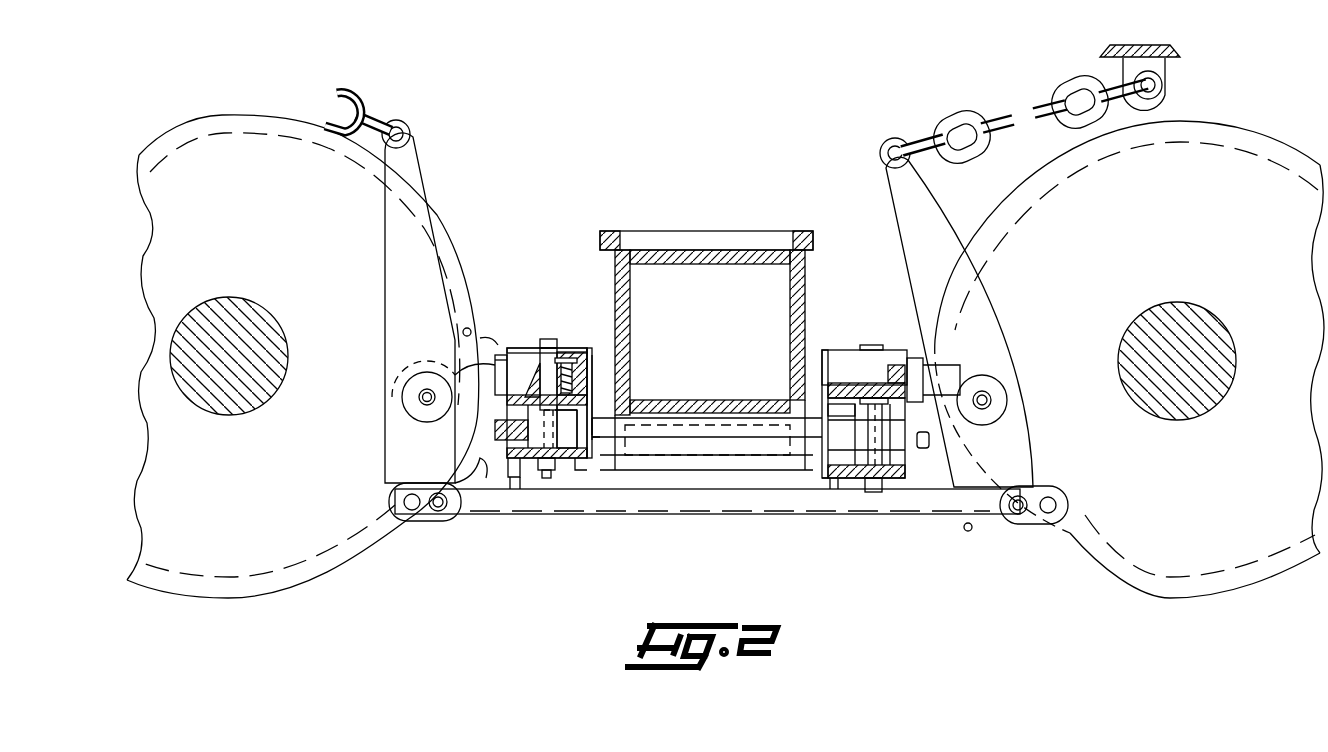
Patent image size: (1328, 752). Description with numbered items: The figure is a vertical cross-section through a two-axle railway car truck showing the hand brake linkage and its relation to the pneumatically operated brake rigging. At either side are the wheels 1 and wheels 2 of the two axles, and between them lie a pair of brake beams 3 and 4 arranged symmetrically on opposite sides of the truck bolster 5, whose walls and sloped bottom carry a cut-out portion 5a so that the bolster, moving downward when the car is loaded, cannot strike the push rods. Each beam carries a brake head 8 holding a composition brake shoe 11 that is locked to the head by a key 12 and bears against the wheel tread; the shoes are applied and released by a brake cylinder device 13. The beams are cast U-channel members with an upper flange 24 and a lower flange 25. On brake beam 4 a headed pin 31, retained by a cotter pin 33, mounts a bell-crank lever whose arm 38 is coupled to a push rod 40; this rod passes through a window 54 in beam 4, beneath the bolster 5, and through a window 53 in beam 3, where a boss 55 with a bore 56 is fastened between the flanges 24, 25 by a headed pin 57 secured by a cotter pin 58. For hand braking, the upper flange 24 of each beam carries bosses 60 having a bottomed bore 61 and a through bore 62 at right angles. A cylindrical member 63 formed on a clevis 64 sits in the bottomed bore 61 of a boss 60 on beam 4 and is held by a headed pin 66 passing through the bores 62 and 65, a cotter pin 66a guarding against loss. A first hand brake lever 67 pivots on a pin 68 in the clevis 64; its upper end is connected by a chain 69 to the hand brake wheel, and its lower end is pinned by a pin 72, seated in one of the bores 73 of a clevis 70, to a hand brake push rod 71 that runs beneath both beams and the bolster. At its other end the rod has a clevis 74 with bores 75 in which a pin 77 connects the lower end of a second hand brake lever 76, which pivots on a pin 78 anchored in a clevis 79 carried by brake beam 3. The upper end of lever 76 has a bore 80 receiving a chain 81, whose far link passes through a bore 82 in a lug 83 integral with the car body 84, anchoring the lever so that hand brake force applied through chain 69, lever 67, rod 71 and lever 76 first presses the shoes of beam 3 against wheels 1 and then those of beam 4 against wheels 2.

The wheel 1 is at (1248, 168).
The wheel 2 is at (230, 148).
The brake beam 3 is at (815, 481).
The brake beam 4 is at (608, 363).
The truck bolster 5 is at (800, 298).
The cut-out portion 5a is at (800, 378).
The brake head 8 is at (975, 520).
The brake shoe 11 is at (721, 430).
The key 12 is at (497, 346).
The brake cylinder device 13 is at (469, 474).
The upper flange 24 is at (848, 400).
The lower flange 25 is at (522, 470).
The headed pin 31 is at (555, 466).
The cotter pin 33 is at (547, 478).
The arm 38 is at (496, 432).
The push rod 40 is at (725, 432).
The window 53 is at (832, 420).
The window 54 is at (580, 452).
The boss 55 is at (864, 430).
The bore 56 is at (886, 478).
The headed pin 57 is at (872, 398).
The cotter pin 58 is at (872, 492).
The boss 60 is at (535, 347).
The bottomed bore 61 is at (591, 362).
The through bore 62 is at (549, 352).
The cylindrical member 63 is at (520, 364).
The clevis 64 is at (450, 368).
The bore 65 is at (566, 392).
The headed pin 66 is at (568, 358).
The cotter pin 66a is at (598, 433).
The first hand brake lever 67 is at (398, 273).
The pin 68 is at (423, 398).
The chain 69 is at (394, 120).
The clevis 70 is at (404, 503).
The hand brake push rod 71 is at (700, 500).
The pin 72 is at (435, 512).
The bore 73 is at (408, 490).
The clevis 74 is at (1060, 514).
The bore 75 is at (1047, 498).
The second hand brake lever 76 is at (918, 228).
The pin 77 is at (1018, 512).
The pin 78 is at (989, 400).
The clevis 79 is at (962, 385).
The bore 80 is at (881, 158).
The chain 81 is at (1027, 98).
The bore 82 is at (1158, 88).
The lug 83 is at (1155, 70).
The car body 84 is at (1164, 50).